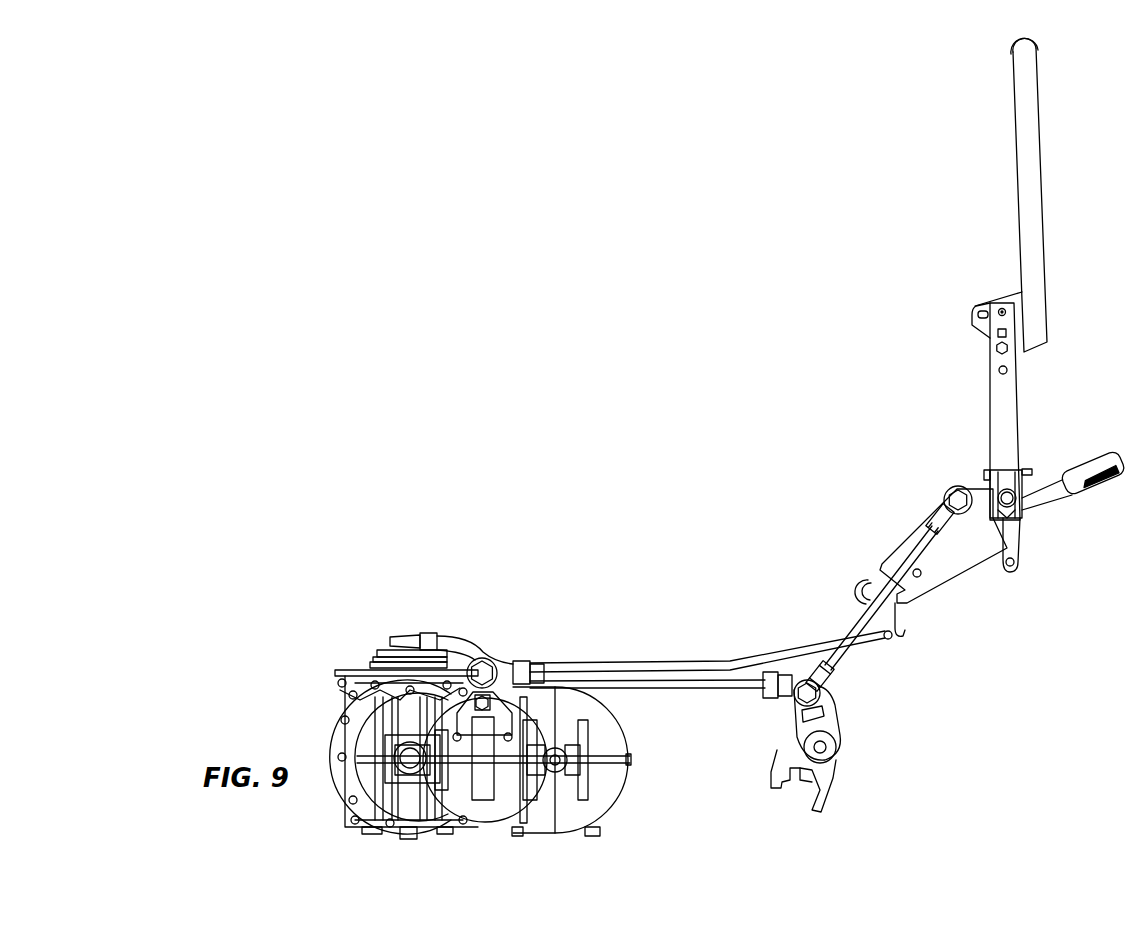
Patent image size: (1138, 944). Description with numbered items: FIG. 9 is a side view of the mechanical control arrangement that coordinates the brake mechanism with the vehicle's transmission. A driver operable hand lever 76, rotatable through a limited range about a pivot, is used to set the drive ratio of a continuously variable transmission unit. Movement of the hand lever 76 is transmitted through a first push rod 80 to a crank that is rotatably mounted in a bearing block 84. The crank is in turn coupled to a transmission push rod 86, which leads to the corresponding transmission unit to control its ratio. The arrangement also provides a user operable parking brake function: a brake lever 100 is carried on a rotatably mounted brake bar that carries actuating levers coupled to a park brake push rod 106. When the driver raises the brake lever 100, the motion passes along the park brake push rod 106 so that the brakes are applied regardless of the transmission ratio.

The hand lever 76 is at (1030, 160).
The brake lever 100 is at (1047, 500).
The first push rod 80 is at (850, 630).
The park brake push rod 106 is at (775, 657).
The transmission push rod 86 is at (730, 690).
The bearing block 84 is at (838, 722).